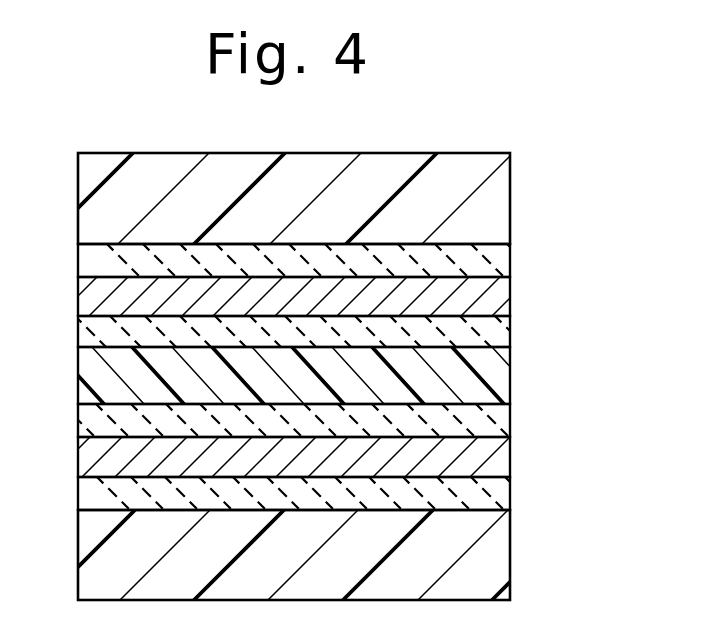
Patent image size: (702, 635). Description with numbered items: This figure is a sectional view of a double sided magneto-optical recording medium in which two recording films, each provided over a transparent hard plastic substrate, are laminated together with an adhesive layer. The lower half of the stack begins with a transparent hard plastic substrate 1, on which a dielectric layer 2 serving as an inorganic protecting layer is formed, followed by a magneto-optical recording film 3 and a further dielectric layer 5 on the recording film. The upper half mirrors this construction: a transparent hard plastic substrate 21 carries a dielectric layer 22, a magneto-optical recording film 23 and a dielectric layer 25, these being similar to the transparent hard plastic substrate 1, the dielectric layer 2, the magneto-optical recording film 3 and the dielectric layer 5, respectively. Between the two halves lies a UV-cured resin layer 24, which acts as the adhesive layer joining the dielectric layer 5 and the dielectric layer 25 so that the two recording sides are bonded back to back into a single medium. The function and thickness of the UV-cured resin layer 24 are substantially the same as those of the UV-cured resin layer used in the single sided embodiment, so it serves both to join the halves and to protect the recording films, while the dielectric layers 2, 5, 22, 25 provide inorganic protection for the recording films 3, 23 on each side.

The transparent hard plastic substrate 1 is at (503, 558).
The dielectric layer 2 is at (502, 496).
The magneto-optical recording film 3 is at (502, 460).
The dielectric layer 5 is at (502, 424).
The transparent hard plastic substrate 21 is at (502, 201).
The dielectric layer 22 is at (502, 259).
The magneto-optical recording film 23 is at (502, 297).
The UV-cured resin layer 24 is at (502, 372).
The dielectric layer 25 is at (502, 335).